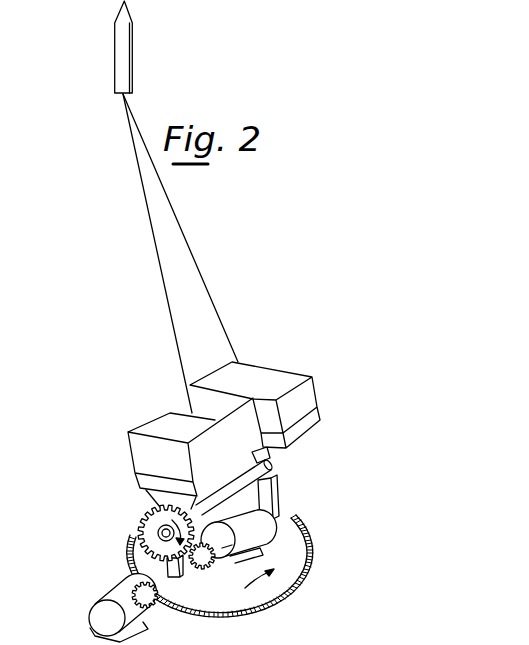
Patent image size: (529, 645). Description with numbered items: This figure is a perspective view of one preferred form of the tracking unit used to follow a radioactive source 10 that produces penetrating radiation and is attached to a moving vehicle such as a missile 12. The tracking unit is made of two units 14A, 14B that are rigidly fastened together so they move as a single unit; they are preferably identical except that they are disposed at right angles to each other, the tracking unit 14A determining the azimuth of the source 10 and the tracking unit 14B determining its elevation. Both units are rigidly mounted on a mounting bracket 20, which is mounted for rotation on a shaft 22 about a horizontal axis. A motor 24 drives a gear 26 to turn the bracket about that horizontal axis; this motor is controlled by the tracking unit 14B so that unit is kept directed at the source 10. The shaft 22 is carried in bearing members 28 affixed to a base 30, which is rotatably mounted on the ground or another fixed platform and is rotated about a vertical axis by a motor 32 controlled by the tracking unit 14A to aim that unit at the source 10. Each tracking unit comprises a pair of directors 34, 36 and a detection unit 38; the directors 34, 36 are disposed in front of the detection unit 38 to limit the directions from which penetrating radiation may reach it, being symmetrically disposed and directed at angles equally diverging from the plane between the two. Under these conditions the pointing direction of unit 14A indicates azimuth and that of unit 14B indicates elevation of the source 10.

The radioactive source 10 is at (126, 92).
The missile 12 is at (133, 54).
The tracking unit 14A is at (126, 452).
The tracking unit 14B is at (308, 364).
The mounting bracket 20 is at (152, 494).
The shaft 22 is at (162, 538).
The motor 24 is at (250, 535).
The gear 26 is at (156, 519).
The bearing members 28 is at (271, 489).
The base 30 is at (298, 557).
The motor 32 is at (122, 598).
The director 34 is at (248, 370).
The director 36 is at (278, 378).
The detection unit 38 is at (311, 418).